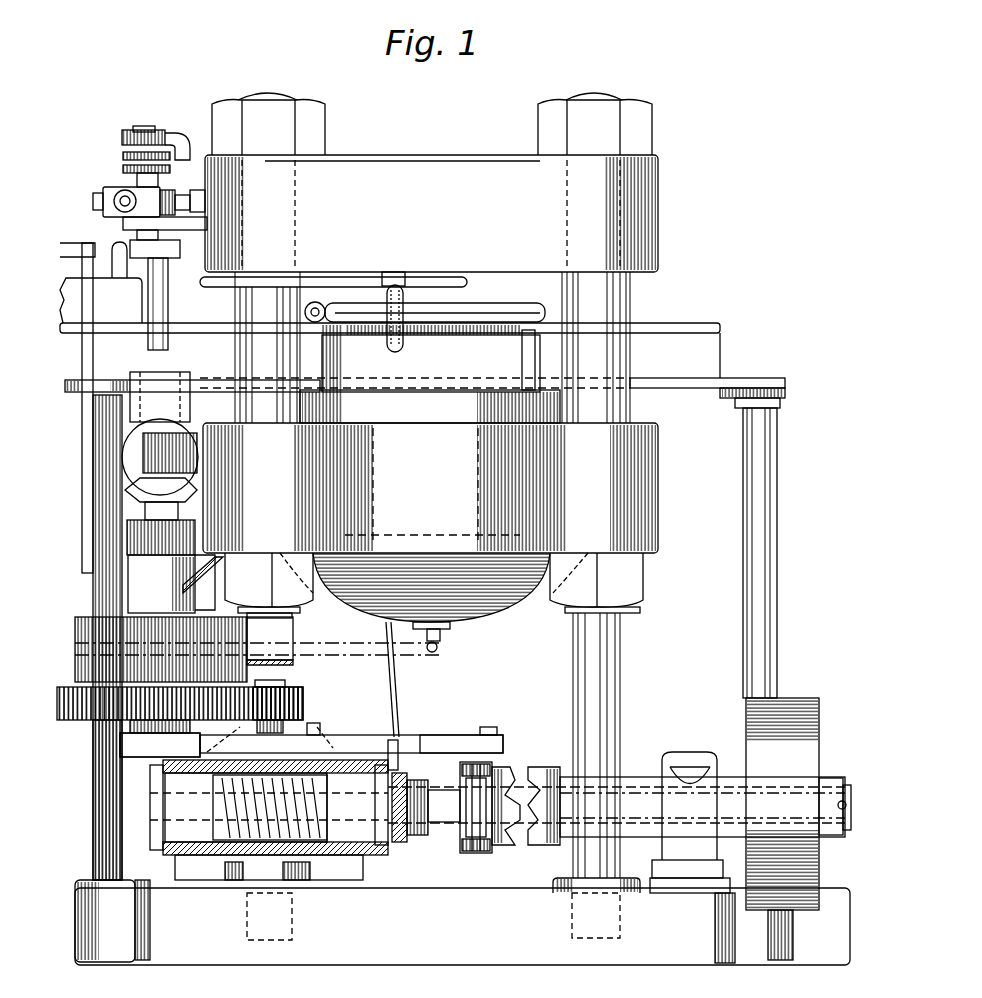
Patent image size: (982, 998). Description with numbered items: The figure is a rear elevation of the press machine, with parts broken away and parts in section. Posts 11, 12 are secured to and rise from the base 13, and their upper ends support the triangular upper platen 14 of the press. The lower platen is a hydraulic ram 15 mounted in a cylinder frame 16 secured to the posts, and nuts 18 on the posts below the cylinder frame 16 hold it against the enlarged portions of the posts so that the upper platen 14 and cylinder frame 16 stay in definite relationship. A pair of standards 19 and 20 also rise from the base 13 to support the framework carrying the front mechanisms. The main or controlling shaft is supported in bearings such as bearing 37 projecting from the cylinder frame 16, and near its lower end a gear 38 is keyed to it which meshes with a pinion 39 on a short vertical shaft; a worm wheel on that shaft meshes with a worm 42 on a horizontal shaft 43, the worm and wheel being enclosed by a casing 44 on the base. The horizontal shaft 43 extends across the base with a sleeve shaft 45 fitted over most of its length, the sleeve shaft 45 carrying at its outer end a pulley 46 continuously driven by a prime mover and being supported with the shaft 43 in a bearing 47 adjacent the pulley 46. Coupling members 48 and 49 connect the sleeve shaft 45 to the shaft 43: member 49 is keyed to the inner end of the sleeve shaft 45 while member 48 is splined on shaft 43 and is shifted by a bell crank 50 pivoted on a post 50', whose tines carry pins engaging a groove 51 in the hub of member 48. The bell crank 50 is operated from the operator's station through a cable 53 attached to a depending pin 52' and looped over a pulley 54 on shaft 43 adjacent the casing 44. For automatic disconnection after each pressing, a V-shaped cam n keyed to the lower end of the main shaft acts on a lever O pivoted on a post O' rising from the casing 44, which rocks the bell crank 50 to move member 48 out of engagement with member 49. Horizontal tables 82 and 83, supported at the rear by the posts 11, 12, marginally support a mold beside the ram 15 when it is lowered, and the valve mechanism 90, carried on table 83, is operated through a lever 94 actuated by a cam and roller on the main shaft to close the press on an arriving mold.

The post 11 is at (590, 92).
The post 12 is at (266, 92).
The base 13 is at (462, 922).
The upper platen 14 is at (429, 221).
The hydraulic ram 15 is at (415, 347).
The cylinder frame 16 is at (430, 488).
The nuts 18 is at (658, 575).
The standard 19 is at (95, 839).
The standard 20 is at (777, 588).
The bearing 37 is at (257, 550).
The gear 38 is at (92, 722).
The pinion 39 is at (305, 705).
The worm 42 is at (269, 807).
The horizontal shaft 43 is at (442, 822).
The casing 44 is at (175, 866).
The sleeve shaft 45 is at (630, 786).
The pulley 46 is at (805, 697).
The bearing 47 is at (688, 752).
The coupling member 48 is at (506, 770).
The coupling member 49 is at (545, 767).
The bell crank 50 is at (461, 731).
The post 50' is at (489, 717).
The groove 51 is at (468, 800).
The depending pin 52' is at (408, 740).
The cable 53 is at (397, 691).
The pulley 54 is at (412, 842).
The table 82 is at (686, 326).
The table 83 is at (207, 326).
The valve mechanism 90 is at (133, 349).
The lever 94 is at (438, 647).
The V-shaped cam n is at (140, 758).
The lever O is at (351, 731).
The post O' is at (320, 720).